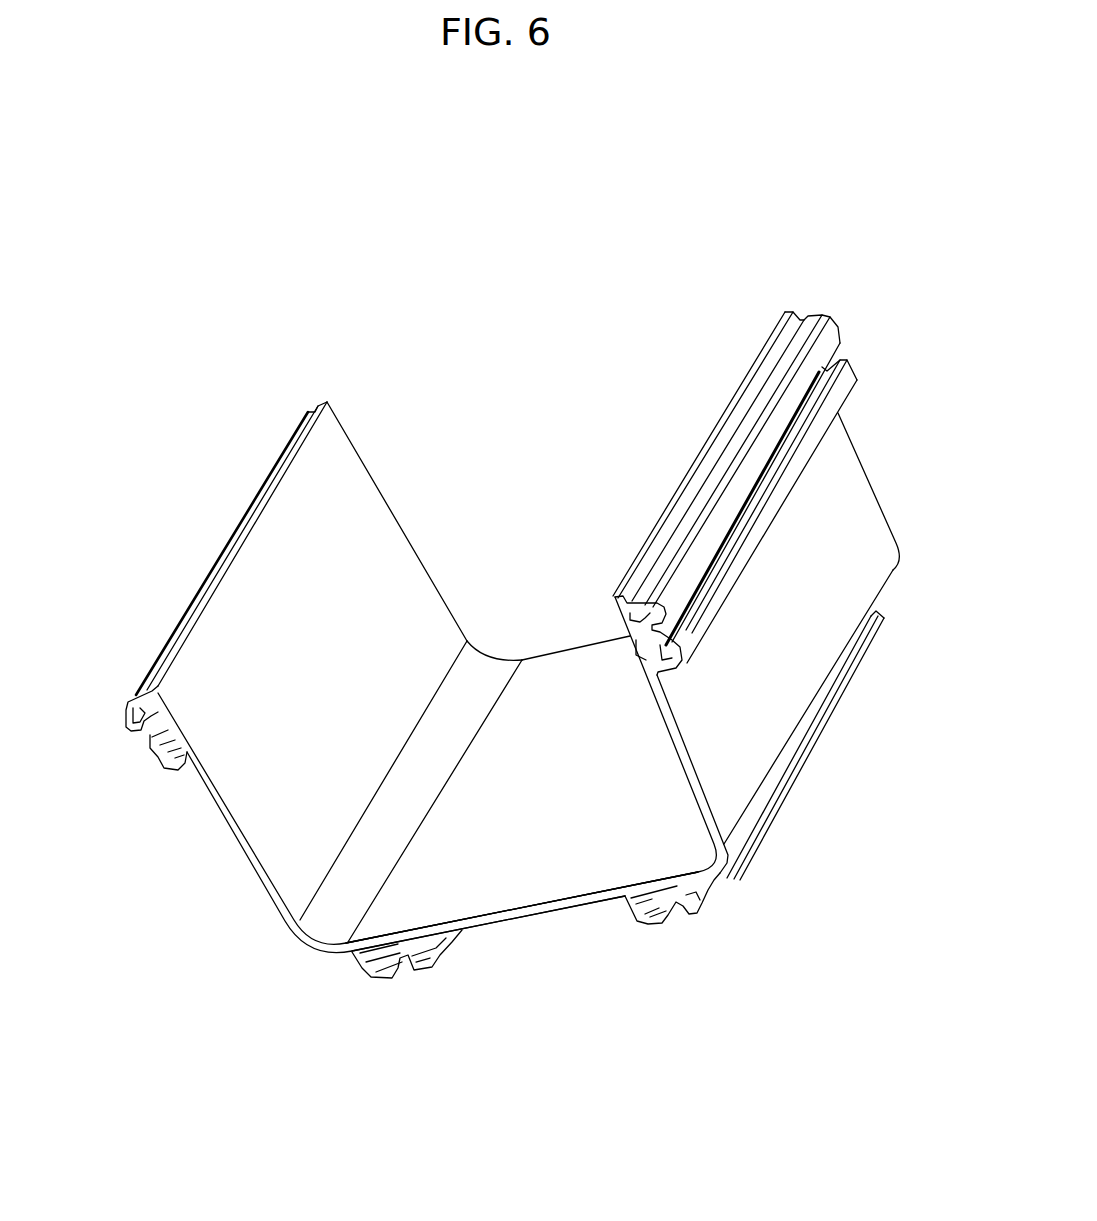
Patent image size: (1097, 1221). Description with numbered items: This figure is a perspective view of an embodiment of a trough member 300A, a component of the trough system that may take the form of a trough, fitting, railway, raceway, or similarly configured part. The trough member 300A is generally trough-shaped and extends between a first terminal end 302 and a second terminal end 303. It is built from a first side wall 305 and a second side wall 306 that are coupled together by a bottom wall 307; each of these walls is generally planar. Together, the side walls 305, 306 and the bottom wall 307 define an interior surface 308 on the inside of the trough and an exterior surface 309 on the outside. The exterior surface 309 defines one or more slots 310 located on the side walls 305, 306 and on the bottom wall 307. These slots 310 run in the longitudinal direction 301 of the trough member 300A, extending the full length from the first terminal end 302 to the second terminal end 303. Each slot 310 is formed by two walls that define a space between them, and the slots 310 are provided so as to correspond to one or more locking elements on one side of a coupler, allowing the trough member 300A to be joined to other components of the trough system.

The trough member 300A is at (835, 275).
The longitudinal direction 301 is at (650, 500).
The first terminal end 302 is at (530, 925).
The second terminal end 303 is at (532, 643).
The first side wall 305 is at (830, 590).
The second side wall 306 is at (331, 510).
The bottom wall 307 is at (623, 731).
The interior surface 308 is at (523, 853).
The exterior surface 309 is at (838, 527).
The slot 310 is at (697, 632).